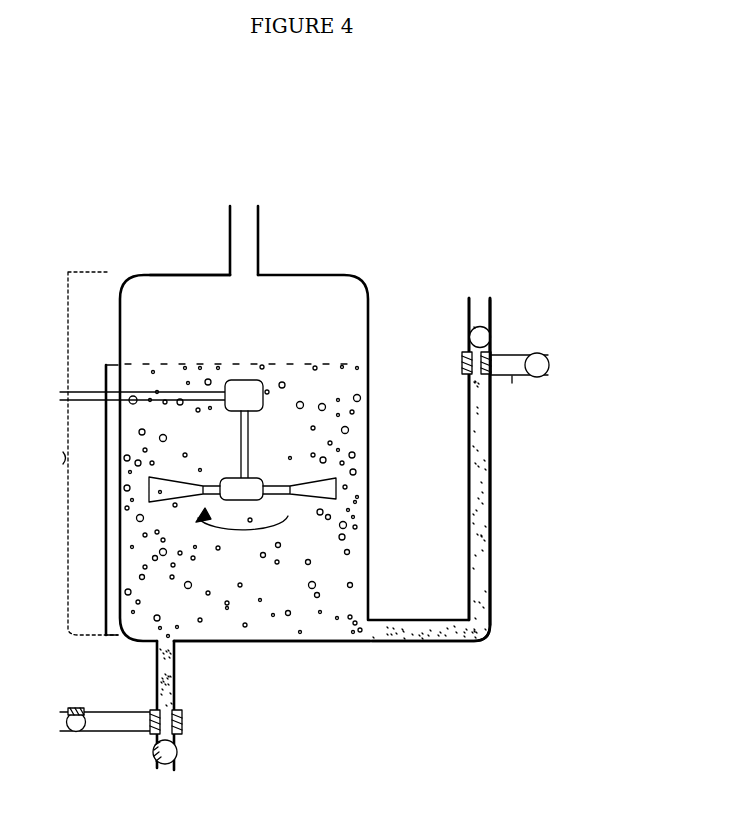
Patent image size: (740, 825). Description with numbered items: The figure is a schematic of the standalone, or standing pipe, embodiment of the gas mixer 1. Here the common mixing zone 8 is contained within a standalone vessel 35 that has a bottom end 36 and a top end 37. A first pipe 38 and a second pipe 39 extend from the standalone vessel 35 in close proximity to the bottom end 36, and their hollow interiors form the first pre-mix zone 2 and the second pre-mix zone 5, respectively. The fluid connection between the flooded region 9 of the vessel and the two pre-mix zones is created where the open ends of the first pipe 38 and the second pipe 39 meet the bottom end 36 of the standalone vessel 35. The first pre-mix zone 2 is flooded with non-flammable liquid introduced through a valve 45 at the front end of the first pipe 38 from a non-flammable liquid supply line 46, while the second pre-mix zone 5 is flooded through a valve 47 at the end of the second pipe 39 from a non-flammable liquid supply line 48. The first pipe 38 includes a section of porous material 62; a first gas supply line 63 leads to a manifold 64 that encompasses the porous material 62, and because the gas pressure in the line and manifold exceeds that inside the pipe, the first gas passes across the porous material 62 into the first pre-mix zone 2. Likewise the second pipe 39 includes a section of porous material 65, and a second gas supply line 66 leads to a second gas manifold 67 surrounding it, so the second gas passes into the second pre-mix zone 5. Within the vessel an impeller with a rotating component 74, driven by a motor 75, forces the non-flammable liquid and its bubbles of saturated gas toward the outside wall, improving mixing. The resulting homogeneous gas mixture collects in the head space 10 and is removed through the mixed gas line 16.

The gas mixer 1 is at (510, 231).
The first pre-mix zone 2 is at (157, 660).
The second pre-mix zone 5 is at (410, 630).
The common mixing zone 8 is at (66, 458).
The flooded region 9 is at (106, 503).
The head space 10 is at (236, 337).
The mixed gas line 16 is at (258, 250).
The standalone vessel 35 is at (368, 322).
The bottom end 36 is at (272, 656).
The top end 37 is at (190, 258).
The first pipe 38 is at (175, 660).
The second pipe 39 is at (489, 597).
The valve 45 is at (177, 758).
The non-flammable liquid supply line 46 is at (157, 766).
The valve 47 is at (548, 362).
The non-flammable liquid supply line 48 is at (490, 313).
The porous material 62 is at (180, 726).
The first gas supply line 63 is at (112, 722).
The manifold 64 is at (180, 712).
The porous material 65 is at (462, 357).
The second gas supply line 66 is at (512, 378).
The second gas manifold 67 is at (470, 368).
The rotating component 74 is at (265, 495).
The motor 75 is at (245, 395).